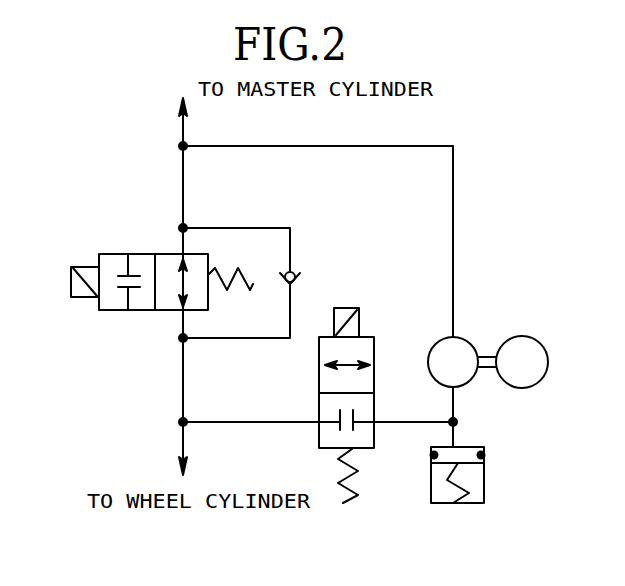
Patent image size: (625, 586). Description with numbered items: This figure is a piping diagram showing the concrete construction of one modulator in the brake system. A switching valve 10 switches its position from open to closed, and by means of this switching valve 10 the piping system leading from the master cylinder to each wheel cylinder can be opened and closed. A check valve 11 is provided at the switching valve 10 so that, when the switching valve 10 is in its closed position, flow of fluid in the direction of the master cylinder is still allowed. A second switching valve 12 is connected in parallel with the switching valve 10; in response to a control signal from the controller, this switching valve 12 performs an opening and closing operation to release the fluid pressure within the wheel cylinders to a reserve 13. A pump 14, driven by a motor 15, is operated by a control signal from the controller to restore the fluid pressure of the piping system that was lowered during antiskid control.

The switching valve 10 is at (167, 254).
The check valve 11 is at (290, 243).
The switching valve 12 is at (319, 381).
The reserve 13 is at (484, 478).
The pump 14 is at (469, 336).
The motor 15 is at (533, 336).